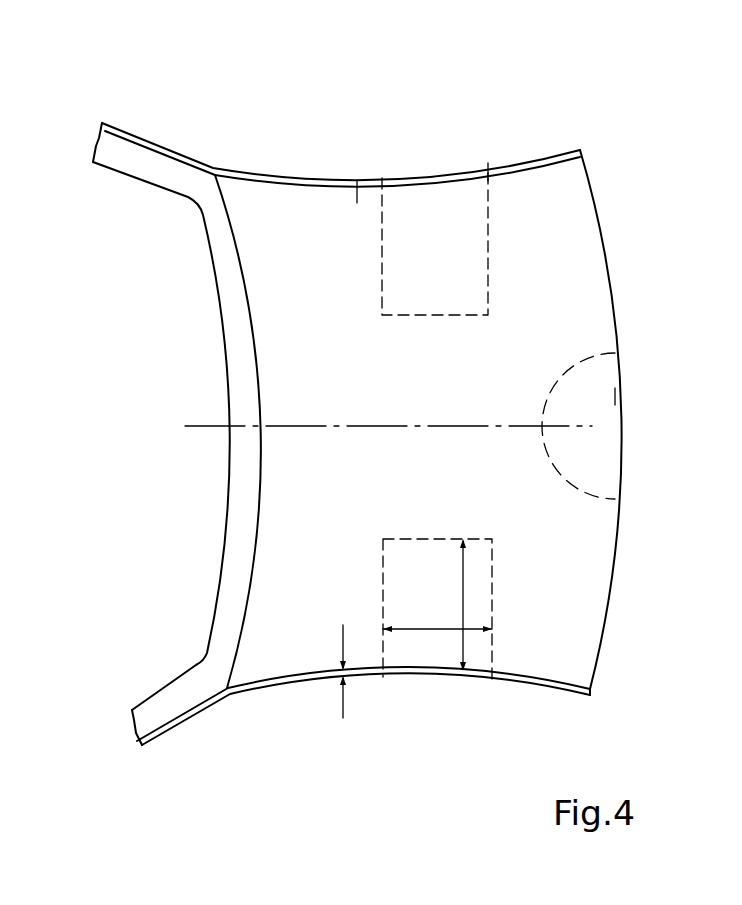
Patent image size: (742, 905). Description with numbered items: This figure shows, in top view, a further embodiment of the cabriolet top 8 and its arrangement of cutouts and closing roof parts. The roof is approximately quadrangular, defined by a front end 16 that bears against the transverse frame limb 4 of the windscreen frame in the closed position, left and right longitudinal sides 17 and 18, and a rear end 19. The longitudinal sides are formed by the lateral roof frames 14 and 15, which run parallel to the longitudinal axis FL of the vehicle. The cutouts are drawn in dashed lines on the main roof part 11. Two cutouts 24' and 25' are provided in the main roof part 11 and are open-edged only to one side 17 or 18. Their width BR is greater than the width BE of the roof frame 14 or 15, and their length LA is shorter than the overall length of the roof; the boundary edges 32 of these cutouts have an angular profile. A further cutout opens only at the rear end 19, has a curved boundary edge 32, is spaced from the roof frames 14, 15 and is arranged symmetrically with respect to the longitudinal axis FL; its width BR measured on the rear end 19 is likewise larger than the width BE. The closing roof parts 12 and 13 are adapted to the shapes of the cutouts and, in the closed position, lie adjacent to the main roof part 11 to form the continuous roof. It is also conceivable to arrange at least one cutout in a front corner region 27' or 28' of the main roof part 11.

The cabriolet top 8 is at (582, 114).
The transverse frame limb 4 is at (236, 405).
The main roof part 11 is at (358, 180).
The closing roof part 12 is at (468, 318).
The closing roof part 13 is at (436, 544).
The lateral roof frame 14 is at (411, 676).
The lateral roof frame 15 is at (320, 184).
The front end 16 is at (252, 360).
The longitudinal side 17 is at (537, 683).
The longitudinal side 18 is at (521, 162).
The rear end 19 is at (613, 587).
The cutout 24' is at (592, 507).
The cutout 25' is at (356, 355).
The front corner region 27' is at (270, 703).
The front corner region 28' is at (255, 134).
The boundary edge 32 is at (581, 343).
The longitudinal axis FL is at (370, 426).
The length of cutout LA is at (432, 626).
The width of cutout BR is at (465, 585).
The width of roof frame BE is at (340, 672).